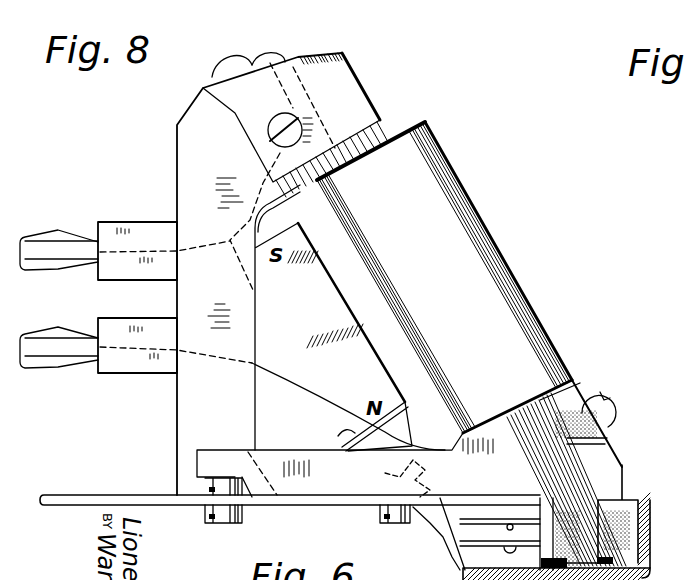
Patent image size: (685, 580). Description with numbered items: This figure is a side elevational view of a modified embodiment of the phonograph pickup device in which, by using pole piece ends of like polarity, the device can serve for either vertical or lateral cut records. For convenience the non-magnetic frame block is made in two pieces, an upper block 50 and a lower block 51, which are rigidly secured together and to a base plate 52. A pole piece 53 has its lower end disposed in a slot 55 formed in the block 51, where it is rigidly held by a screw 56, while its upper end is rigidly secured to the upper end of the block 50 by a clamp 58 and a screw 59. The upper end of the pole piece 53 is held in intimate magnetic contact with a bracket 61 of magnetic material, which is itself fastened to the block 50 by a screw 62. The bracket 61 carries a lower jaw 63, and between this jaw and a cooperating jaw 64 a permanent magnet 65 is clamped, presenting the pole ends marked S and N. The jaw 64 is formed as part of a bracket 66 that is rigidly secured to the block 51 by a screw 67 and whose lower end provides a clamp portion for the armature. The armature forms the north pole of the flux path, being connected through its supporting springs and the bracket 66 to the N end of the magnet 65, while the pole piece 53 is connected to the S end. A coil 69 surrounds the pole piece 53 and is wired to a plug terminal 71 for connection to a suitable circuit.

The frame block piece 50 is at (192, 173).
The frame block piece 51 is at (263, 452).
The base plate 52 is at (128, 497).
The pole piece 53 is at (380, 133).
The slot 55 is at (575, 468).
The screw 56 is at (590, 398).
The clamp 58 is at (348, 97).
The screw 59 is at (270, 131).
The bracket 61 is at (275, 63).
The screw 62 is at (233, 63).
The lower jaw 63 is at (285, 222).
The cooperating jaw 64 is at (350, 432).
The permanent magnet 65 is at (337, 318).
The bracket 66 is at (430, 523).
The screw 67 is at (317, 478).
The coil 69 is at (482, 267).
The plug terminal 71 is at (55, 343).